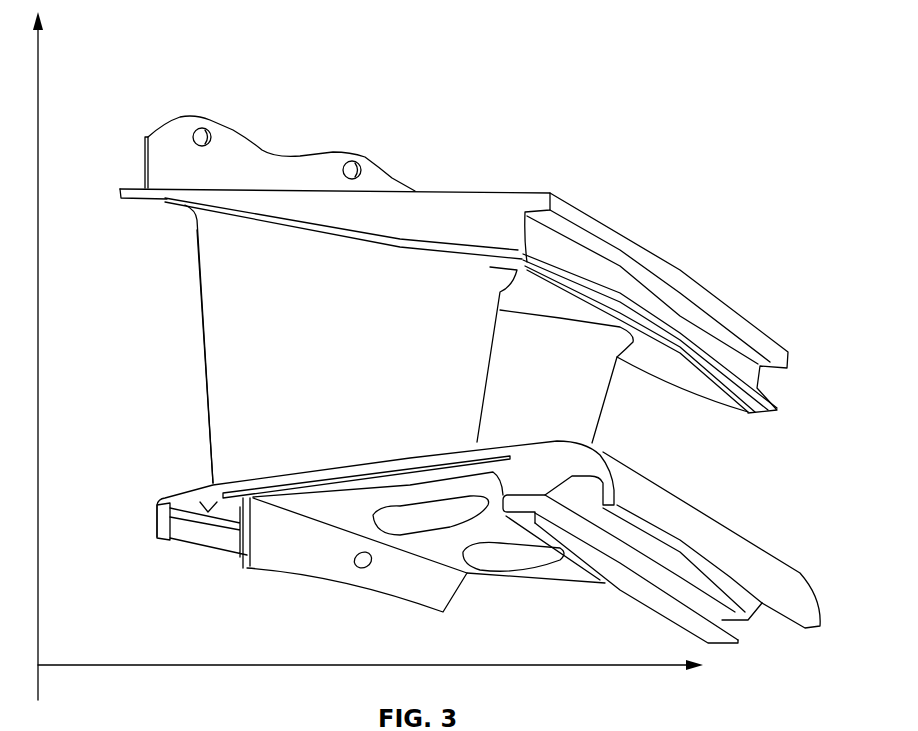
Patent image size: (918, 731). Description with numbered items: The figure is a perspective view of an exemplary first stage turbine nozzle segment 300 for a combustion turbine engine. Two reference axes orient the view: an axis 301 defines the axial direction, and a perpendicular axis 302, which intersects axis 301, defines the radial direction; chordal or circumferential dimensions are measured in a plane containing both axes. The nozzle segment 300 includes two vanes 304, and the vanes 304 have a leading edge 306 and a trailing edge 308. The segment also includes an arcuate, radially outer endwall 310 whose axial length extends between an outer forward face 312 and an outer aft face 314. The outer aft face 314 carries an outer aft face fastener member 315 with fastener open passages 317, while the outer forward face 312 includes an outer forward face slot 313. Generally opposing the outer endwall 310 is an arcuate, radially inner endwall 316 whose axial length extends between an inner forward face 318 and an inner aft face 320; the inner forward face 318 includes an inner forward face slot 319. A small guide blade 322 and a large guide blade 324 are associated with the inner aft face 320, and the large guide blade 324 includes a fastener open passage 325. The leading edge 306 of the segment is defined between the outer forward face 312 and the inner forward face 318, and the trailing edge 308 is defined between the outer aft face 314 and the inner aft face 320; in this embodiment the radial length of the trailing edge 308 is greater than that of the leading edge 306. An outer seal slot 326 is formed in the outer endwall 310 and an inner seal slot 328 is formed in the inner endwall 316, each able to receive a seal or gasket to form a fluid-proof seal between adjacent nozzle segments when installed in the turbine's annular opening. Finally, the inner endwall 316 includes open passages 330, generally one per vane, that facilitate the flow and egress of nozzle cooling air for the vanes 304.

The first stage turbine nozzle segment 300 is at (256, 57).
The axis 301 is at (553, 662).
The axis 302 is at (38, 43).
The vanes 304 is at (345, 336).
The leading edge 306 is at (607, 397).
The trailing edge 308 is at (210, 382).
The radially outer endwall 310 is at (440, 192).
The outer forward face 312 is at (642, 252).
The outer forward face slot 313 is at (753, 372).
The outer aft face 314 is at (145, 175).
The outer aft face fastener member 315 is at (240, 181).
The radially inner endwall 316 is at (430, 490).
The fastener open passages 317 is at (200, 130).
The inner forward face 318 is at (715, 528).
The inner forward face slot 319 is at (733, 615).
The inner aft face 320 is at (157, 512).
The small guide blade 322 is at (230, 528).
The large guide blade 324 is at (290, 557).
The fastener open passage 325 is at (377, 568).
The outer seal slot 326 is at (167, 203).
The inner seal slot 328 is at (242, 478).
The open passages 330 is at (405, 527).